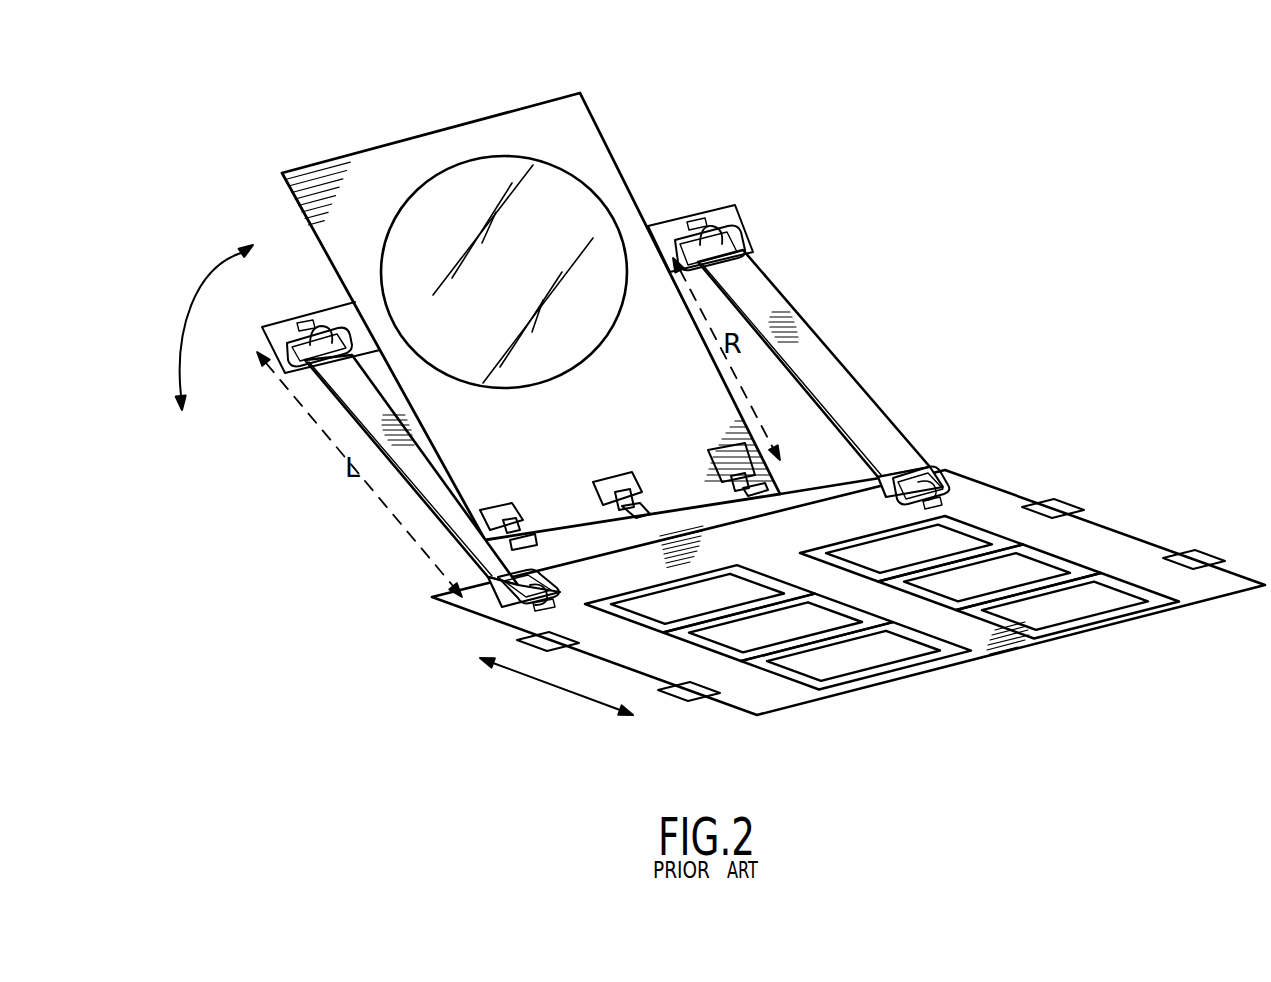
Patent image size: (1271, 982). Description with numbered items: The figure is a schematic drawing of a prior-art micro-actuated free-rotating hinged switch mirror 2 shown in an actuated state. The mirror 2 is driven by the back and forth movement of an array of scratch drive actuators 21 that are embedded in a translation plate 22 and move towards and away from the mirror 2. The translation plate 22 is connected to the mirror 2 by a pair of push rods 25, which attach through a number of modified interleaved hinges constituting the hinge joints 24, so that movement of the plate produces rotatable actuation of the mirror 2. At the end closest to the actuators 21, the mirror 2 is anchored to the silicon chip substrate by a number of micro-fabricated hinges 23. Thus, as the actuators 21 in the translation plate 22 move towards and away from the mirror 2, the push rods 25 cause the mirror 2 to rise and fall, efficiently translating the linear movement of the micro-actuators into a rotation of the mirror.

The switch mirror 2 is at (390, 147).
The scratch drive actuators 21 is at (903, 667).
The translation plate 22 is at (977, 493).
The micro-fabricated hinges 23 is at (708, 448).
The hinge joints 24 is at (925, 465).
The push rods 25 is at (433, 488).